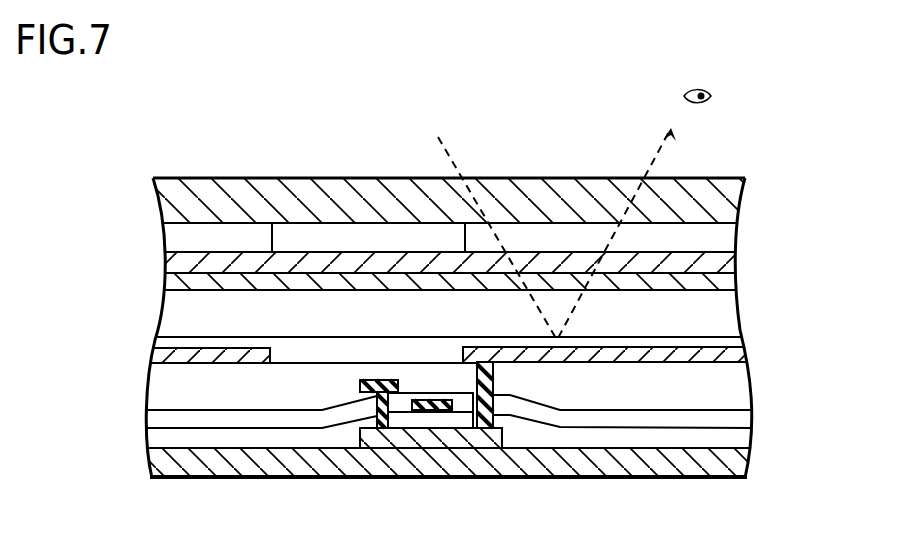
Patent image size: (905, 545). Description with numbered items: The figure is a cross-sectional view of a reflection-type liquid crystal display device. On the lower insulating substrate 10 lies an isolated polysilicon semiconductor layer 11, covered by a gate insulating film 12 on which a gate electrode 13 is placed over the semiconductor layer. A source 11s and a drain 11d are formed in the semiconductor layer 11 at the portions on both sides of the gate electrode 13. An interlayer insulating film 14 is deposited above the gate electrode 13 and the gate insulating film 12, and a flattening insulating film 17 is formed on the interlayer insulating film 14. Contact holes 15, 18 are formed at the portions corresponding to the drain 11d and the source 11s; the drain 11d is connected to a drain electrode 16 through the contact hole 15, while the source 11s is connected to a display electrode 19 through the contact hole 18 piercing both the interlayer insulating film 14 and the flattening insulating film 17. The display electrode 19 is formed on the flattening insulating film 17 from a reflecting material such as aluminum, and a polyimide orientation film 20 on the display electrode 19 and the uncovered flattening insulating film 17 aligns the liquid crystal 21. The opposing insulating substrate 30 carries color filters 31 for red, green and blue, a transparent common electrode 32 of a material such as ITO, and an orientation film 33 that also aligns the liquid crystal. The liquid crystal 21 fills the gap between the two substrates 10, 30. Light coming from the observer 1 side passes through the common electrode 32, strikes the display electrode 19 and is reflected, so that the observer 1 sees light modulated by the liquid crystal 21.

The observer 1 is at (712, 97).
The insulating substrate 10 is at (751, 463).
The polysilicon semiconductor layer 11 is at (512, 442).
The drain 11d is at (400, 410).
The source 11s is at (503, 428).
The gate insulating film 12 is at (752, 440).
The gate electrode 13 is at (432, 398).
The interlayer insulating film 14 is at (753, 418).
The contact hole 15 is at (430, 413).
The drain electrode 16 is at (381, 380).
The flattening insulating film 17 is at (748, 388).
The contact hole 18 is at (495, 383).
The display electrode 19 is at (746, 358).
The orientation film 20 is at (741, 340).
The liquid crystal 21 is at (736, 308).
The insulating substrate 30 is at (740, 195).
The color filters 31 is at (734, 230).
The common electrode 32 is at (733, 258).
The orientation film 33 is at (733, 280).